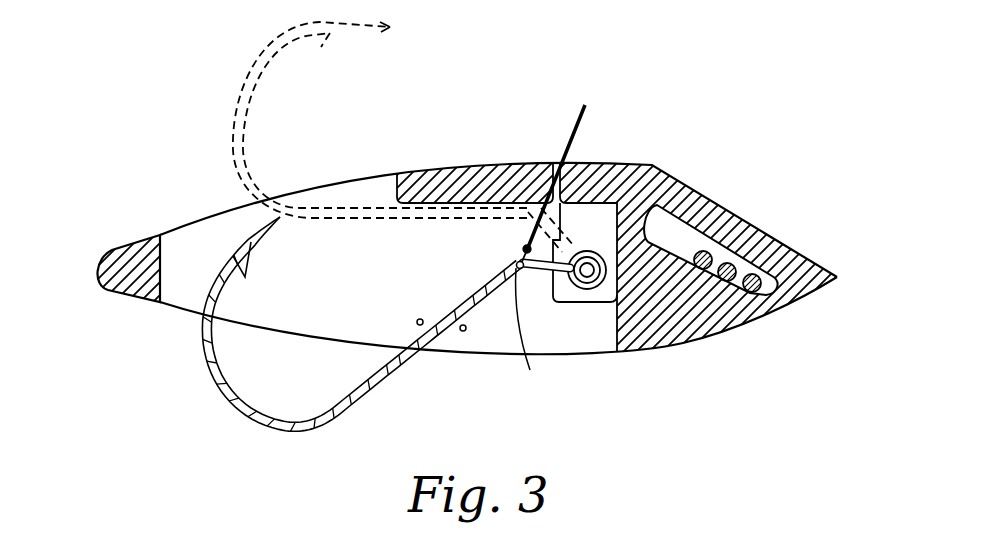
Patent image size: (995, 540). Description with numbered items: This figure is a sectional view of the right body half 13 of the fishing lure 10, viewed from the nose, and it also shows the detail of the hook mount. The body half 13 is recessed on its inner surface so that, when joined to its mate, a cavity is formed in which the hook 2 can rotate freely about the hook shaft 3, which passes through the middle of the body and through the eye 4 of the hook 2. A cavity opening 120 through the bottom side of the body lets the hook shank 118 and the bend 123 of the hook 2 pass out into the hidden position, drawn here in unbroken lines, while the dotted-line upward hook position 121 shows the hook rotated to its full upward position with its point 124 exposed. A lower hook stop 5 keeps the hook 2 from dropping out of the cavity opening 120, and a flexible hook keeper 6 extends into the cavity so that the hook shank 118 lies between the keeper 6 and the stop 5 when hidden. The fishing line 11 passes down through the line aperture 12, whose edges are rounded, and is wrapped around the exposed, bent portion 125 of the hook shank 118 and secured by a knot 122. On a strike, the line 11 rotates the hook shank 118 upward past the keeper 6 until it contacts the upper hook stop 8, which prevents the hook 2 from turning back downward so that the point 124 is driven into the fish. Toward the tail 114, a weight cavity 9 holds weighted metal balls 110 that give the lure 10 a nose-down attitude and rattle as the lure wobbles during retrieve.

The hook 2 is at (219, 378).
The hook shaft 3 is at (587, 278).
The eye 4 is at (553, 272).
The lower hook stop 5 is at (466, 330).
The hook keeper 6 is at (419, 319).
The upper hook stop 8 is at (457, 172).
The weight cavity 9 is at (673, 230).
The fishing lure 10 is at (205, 185).
The fishing line 11 is at (578, 118).
The line aperture 12 is at (558, 160).
The lure body half 13 is at (750, 328).
The weighted metal balls 110 is at (758, 274).
The tail 114 is at (95, 268).
The hook shank 118 is at (377, 382).
The cavity opening 120 is at (335, 334).
The hook extended position 121 is at (338, 178).
The knot 122 is at (521, 254).
The bend 123 is at (294, 426).
The hook point / barb 124 is at (262, 248).
The bent portion of hook shank 125 is at (533, 333).